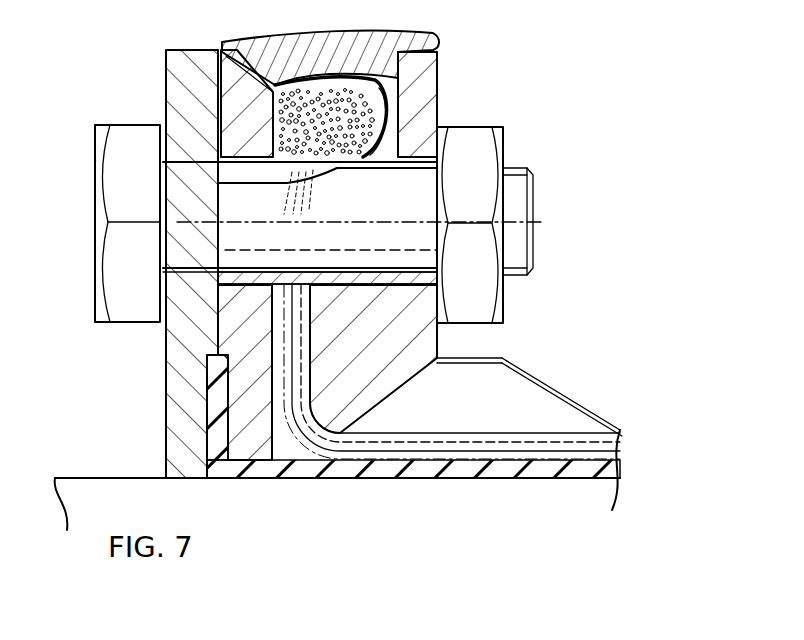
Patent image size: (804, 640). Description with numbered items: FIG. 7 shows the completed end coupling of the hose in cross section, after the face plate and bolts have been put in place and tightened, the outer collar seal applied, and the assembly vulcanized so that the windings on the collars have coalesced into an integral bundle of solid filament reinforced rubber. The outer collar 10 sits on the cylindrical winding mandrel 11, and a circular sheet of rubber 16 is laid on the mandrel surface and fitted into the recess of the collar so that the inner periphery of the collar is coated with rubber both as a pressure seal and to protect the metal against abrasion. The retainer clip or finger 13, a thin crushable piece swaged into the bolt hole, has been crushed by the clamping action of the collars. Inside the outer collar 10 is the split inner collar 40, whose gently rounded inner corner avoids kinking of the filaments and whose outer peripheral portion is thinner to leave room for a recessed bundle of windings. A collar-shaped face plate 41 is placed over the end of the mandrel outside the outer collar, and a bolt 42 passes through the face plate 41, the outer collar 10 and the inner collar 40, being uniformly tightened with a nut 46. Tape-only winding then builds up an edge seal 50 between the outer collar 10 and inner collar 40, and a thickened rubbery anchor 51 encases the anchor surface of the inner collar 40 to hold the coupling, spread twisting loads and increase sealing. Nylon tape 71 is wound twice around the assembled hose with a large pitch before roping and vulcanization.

The outer collar 10 is at (237, 373).
The winding mandrel 11 is at (92, 488).
The retainer clip or finger 13 is at (395, 103).
The circular sheet of rubber 16 is at (224, 416).
The inner collar 40 is at (437, 113).
The face plate 41 is at (166, 452).
The bolt 42 is at (122, 308).
The nut 46 is at (503, 148).
The edge seal 50 is at (373, 45).
The rubbery anchor 51 is at (553, 408).
The nylon tape 71 is at (505, 360).